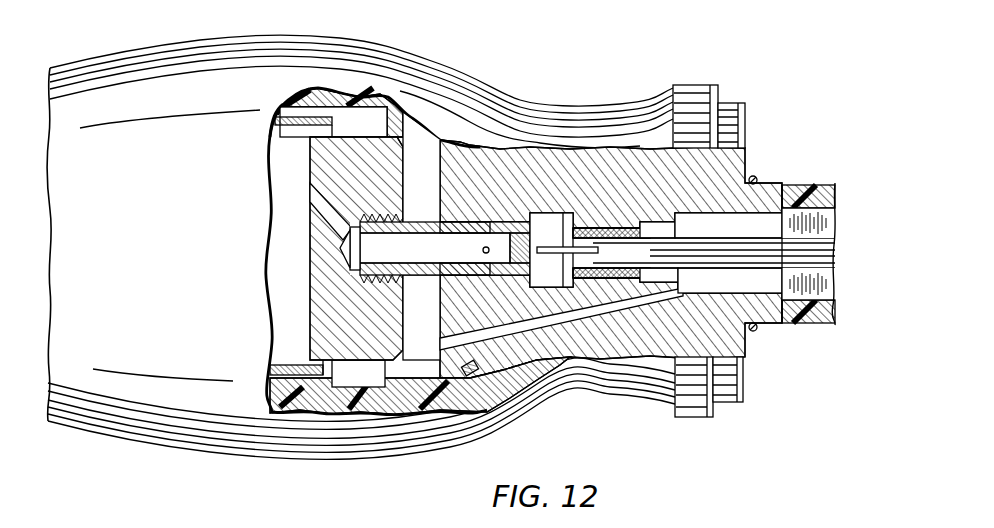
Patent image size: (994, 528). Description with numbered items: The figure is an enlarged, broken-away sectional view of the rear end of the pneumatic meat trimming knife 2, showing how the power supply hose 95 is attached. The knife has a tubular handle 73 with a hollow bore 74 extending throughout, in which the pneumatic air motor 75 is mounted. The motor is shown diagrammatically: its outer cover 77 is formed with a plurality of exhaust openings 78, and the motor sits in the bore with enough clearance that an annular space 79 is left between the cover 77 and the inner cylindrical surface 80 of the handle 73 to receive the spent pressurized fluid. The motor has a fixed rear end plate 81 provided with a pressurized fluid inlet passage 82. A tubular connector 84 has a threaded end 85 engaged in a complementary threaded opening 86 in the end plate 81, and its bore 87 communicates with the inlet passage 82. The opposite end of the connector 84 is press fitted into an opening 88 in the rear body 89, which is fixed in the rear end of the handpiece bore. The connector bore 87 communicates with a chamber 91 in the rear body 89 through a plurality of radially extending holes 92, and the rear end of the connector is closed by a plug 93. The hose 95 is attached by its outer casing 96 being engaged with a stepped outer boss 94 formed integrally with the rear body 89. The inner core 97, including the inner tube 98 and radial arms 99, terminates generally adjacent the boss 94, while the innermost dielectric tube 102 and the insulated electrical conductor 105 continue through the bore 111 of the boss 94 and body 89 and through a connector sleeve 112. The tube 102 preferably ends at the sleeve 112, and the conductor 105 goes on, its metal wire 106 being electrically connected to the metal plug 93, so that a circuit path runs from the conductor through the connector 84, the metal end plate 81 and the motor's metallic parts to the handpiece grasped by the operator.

The pneumatic trimming knife 2 is at (464, 67).
The tubular handle 73 is at (167, 342).
The hollow bore 74 is at (373, 373).
The pneumatic air motor 75 is at (280, 251).
The motor cover 77 is at (283, 127).
The exhaust openings 78 is at (288, 370).
The annular space 79 is at (265, 381).
The inner cylindrical surface 80 is at (340, 390).
The rear end plate 81 is at (377, 158).
The pressurized fluid inlet passage 82 is at (330, 207).
The tubular connector 84 is at (427, 223).
The threaded end 85 is at (368, 274).
The threaded opening 86 is at (370, 217).
The connector bore 87 is at (432, 253).
The opening 88 is at (460, 223).
The rear body 89 is at (576, 160).
The chamber 91 is at (558, 214).
The radially extending holes 92 is at (488, 272).
The plug 93 is at (523, 221).
The stepped outer boss 94 is at (767, 199).
The power supply hose 95 is at (813, 328).
The outer casing 96 is at (818, 200).
The inner core 97 is at (815, 286).
The inner tube 98 is at (820, 250).
The radially extending arms 99 is at (803, 222).
The innermost tube 102 is at (682, 270).
The insulated electrical conductor 105 is at (588, 262).
The metal wire 106 is at (546, 254).
The bore 111 is at (683, 226).
The connector sleeve 112 is at (625, 228).